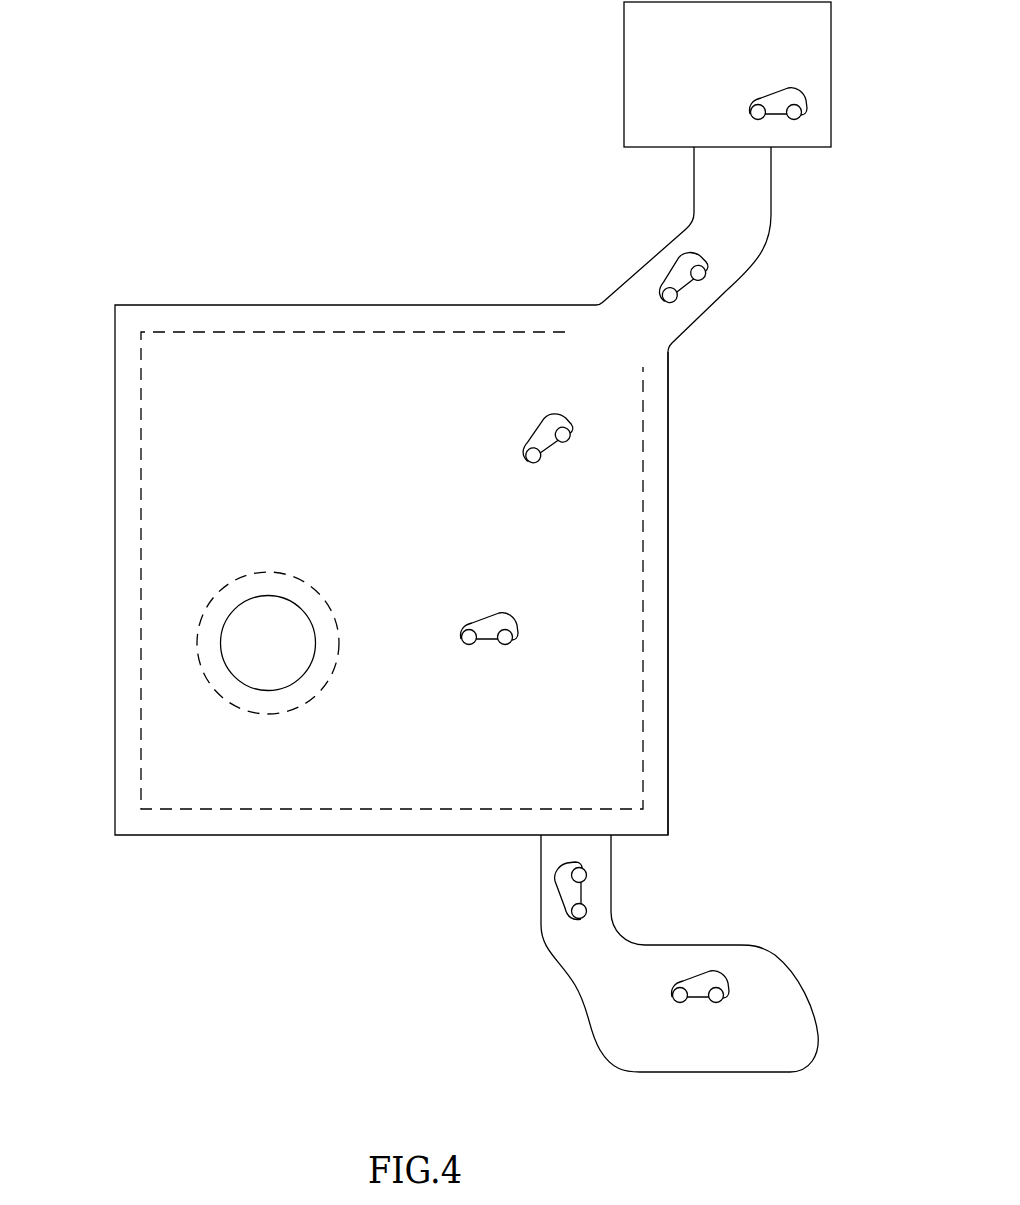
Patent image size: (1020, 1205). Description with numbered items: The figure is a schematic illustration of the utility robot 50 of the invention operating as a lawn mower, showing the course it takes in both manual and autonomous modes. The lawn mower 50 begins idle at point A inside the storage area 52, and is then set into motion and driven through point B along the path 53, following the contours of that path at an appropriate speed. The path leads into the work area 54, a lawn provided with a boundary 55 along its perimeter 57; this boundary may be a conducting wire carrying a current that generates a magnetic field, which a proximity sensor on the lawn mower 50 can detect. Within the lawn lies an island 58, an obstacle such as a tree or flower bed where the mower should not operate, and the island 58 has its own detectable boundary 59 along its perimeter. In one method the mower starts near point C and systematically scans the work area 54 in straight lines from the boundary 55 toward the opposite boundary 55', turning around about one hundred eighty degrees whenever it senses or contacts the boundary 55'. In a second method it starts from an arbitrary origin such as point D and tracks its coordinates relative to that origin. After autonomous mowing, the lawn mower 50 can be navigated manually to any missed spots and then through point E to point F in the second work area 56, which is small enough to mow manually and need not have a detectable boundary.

The utility robot 50 is at (812, 99).
The storage area 52 is at (822, 62).
The path 53 is at (723, 300).
The work area 54 is at (487, 641).
The boundary 55 is at (447, 570).
The boundary 55' is at (358, 570).
The second work area 56 is at (763, 1013).
The perimeter 57 is at (668, 552).
The island 58 is at (222, 655).
The boundary 59 is at (222, 587).